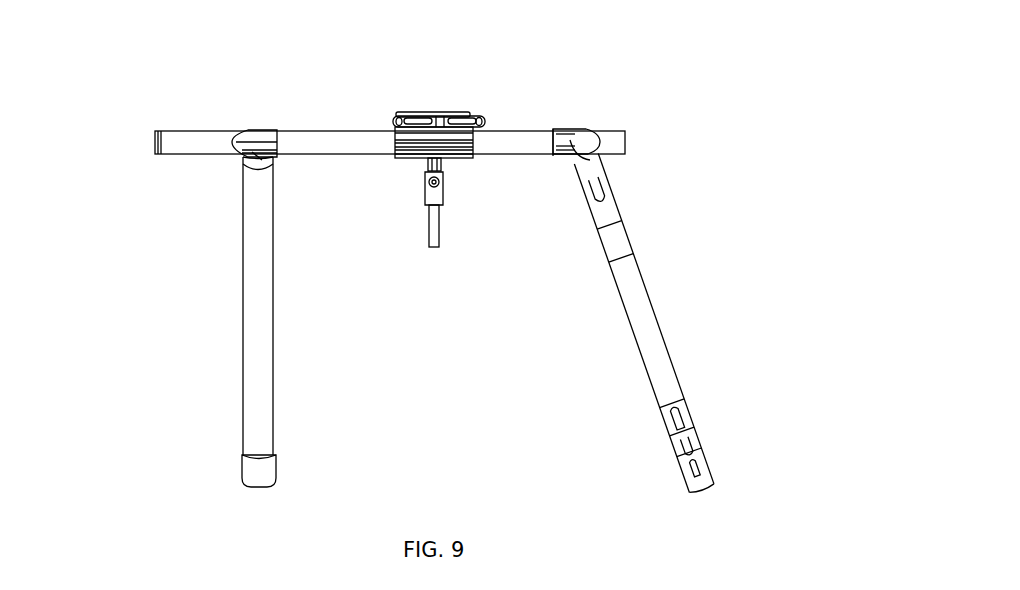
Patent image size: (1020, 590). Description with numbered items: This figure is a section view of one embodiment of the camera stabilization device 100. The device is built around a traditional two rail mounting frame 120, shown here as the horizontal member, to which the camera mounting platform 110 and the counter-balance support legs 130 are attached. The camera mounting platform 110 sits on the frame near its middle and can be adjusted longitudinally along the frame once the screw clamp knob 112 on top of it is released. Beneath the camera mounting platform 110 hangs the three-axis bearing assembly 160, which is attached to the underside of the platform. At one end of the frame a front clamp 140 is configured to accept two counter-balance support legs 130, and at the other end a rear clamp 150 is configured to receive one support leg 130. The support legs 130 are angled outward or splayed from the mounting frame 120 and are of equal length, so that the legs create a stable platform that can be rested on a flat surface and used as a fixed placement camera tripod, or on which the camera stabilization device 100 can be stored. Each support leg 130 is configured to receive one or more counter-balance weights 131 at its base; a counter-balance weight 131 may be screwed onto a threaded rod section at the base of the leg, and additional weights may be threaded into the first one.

The camera stabilization device 100 is at (446, 251).
The camera mounting platform 110 is at (515, 83).
The screw clamp knob 112 is at (488, 118).
The two rail mounting frame 120 is at (186, 155).
The counter-balance support leg 130 is at (172, 322).
The counter-balance weight 131 is at (238, 461).
The front clamp 140 is at (258, 127).
The rear clamp 150 is at (593, 126).
The three-axis bearing assembly 160 is at (452, 226).